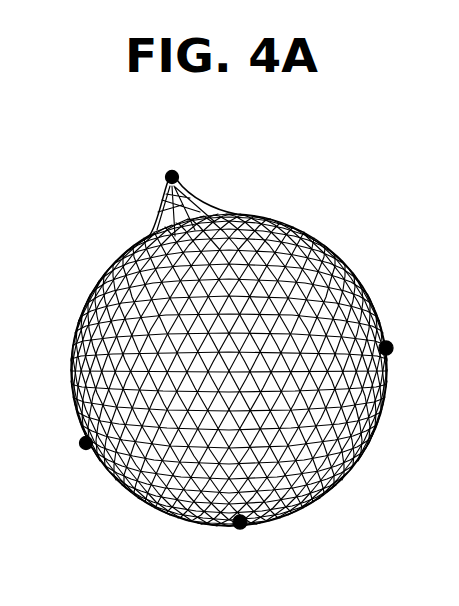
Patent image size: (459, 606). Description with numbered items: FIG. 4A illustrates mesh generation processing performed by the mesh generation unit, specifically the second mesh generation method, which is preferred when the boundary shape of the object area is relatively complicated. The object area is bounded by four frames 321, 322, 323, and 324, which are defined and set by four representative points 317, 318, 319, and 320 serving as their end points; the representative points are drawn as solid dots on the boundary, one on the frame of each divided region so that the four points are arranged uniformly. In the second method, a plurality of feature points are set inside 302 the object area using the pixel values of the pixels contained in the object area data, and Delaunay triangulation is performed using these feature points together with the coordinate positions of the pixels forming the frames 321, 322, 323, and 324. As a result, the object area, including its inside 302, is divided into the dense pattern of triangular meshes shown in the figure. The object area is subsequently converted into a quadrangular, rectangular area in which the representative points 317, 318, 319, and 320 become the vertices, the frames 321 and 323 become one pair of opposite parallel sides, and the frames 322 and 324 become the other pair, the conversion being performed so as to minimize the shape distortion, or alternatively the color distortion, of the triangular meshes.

The inside of the object area 302 is at (277, 293).
The representative point 317 is at (390, 344).
The representative point 318 is at (182, 175).
The representative point 319 is at (86, 451).
The representative point 320 is at (244, 527).
The frame 321 is at (267, 218).
The frame 322 is at (130, 236).
The frame 323 is at (183, 518).
The frame 324 is at (330, 473).